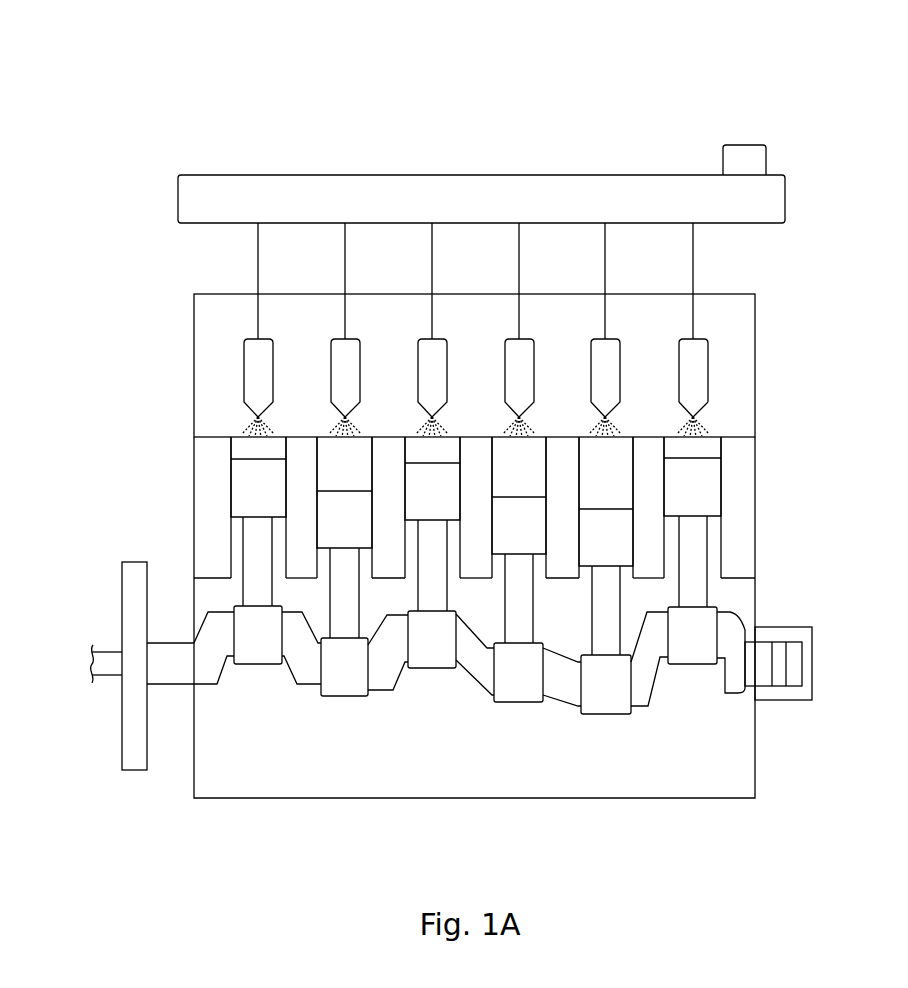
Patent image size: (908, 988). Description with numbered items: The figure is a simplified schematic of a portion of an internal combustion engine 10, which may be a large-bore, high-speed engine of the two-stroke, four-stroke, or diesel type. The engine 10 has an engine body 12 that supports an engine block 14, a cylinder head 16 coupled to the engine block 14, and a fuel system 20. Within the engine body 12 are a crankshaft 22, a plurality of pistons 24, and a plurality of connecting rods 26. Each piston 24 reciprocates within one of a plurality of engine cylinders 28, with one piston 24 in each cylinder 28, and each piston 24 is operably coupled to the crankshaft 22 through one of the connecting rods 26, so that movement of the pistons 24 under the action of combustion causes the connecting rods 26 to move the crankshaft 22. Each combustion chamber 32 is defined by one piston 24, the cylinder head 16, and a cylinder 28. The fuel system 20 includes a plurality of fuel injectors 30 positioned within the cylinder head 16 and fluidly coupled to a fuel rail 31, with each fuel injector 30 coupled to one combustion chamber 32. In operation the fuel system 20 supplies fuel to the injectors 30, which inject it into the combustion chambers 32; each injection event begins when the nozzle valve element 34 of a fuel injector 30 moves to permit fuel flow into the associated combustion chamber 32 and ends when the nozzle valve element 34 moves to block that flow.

The internal combustion engine 10 is at (633, 122).
The engine body 12 is at (787, 532).
The engine block 14 is at (757, 753).
The cylinder head 16 is at (757, 337).
The fuel system 20 is at (232, 366).
The crankshaft 22 is at (648, 675).
The piston 24 is at (518, 508).
The connecting rod 26 is at (702, 590).
The engine cylinder 28 is at (207, 487).
The fuel injector 30 is at (690, 362).
The fuel rail 31 is at (750, 197).
The combustion chamber 32 is at (342, 470).
The nozzle valve element 34 is at (694, 416).